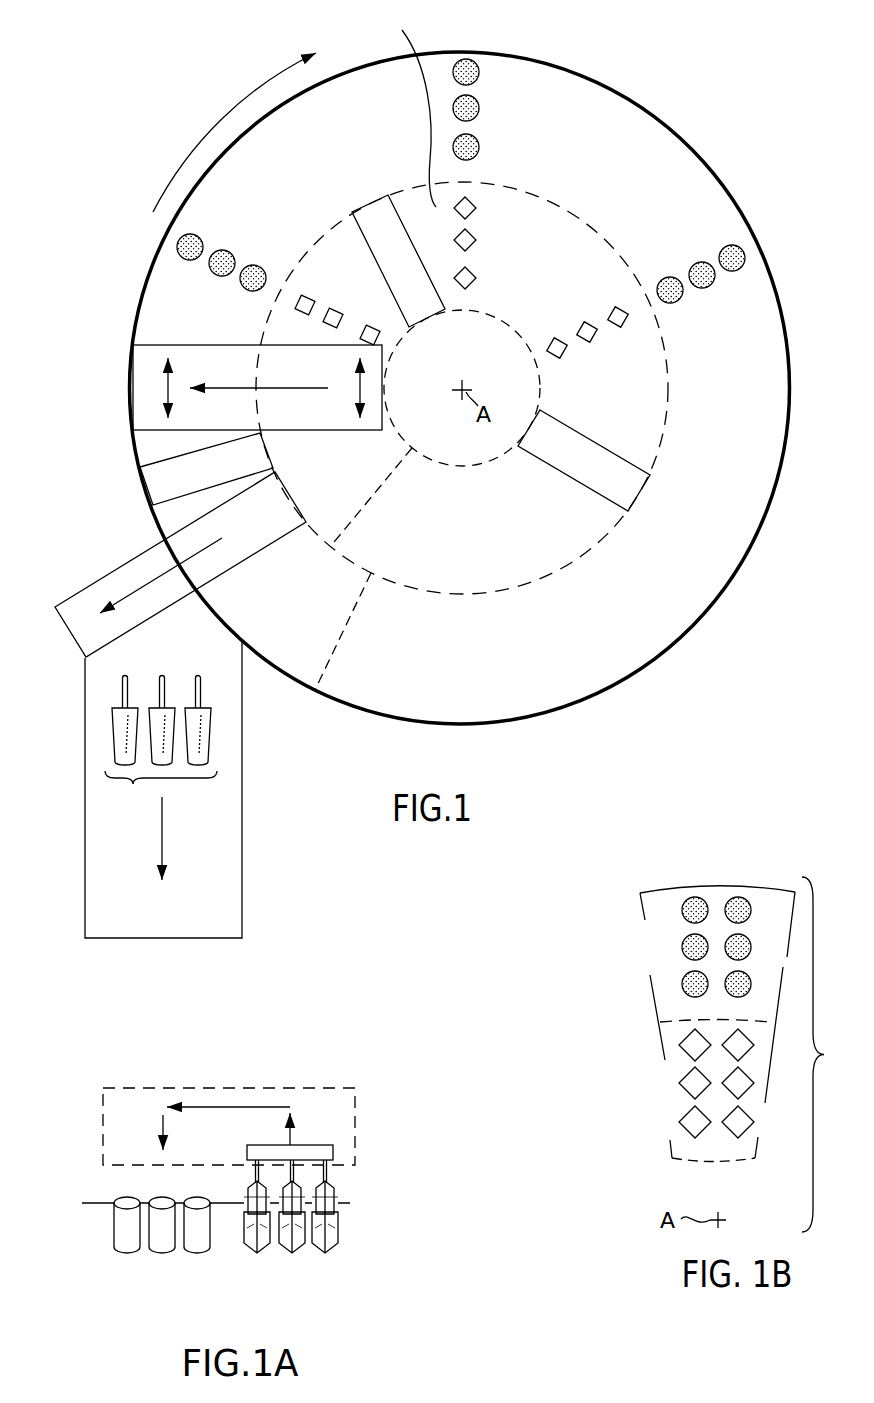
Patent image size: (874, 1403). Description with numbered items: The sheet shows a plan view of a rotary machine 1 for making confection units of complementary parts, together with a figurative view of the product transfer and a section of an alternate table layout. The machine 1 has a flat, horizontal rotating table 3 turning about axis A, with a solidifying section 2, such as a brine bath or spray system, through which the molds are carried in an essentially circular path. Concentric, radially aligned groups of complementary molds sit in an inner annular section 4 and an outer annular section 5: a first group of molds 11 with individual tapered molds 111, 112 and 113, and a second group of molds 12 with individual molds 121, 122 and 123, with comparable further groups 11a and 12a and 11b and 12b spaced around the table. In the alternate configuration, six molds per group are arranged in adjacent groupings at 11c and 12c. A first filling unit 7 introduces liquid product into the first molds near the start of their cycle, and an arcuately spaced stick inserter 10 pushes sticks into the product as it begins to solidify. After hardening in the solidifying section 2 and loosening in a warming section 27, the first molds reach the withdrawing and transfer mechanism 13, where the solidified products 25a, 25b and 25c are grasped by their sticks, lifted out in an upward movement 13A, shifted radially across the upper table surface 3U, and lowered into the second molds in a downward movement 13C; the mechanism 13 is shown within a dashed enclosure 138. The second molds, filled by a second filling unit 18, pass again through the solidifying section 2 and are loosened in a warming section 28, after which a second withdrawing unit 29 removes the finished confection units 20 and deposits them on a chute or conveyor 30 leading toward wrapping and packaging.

In FIG. 1, the machine 1 is at (120, 260).
In FIG. 1, the solidifying section 2 is at (388, 95).
In FIG. 1, the rotating table 3 is at (679, 135).
In FIG. 1, the inner annular section 4 is at (480, 535).
In FIG. 1, the outer annular section 5 is at (550, 665).
In FIG. 1, the first filling unit 7 is at (398, 261).
In FIG. 1, the stick inserter 10 is at (604, 458).
In FIG. 1, the first group of molds 11 is at (387, 330).
In FIG. 1A, the first group of molds 11 is at (340, 1260).
In FIG. 1, the first mold 111 is at (300, 294).
In FIG. 1, the first mold 112 is at (333, 307).
In FIG. 1, the first mold 113 is at (380, 342).
In FIG. 1, the first mold group 11a is at (487, 193).
In FIG. 1, the first mold group 11b is at (638, 323).
In FIG. 1B, the first mold group 11c is at (667, 1030).
In FIG. 1, the second group of molds 12 is at (258, 305).
In FIG. 1A, the second group of molds 12 is at (210, 1260).
In FIG. 1, the second mold 121 is at (177, 247).
In FIG. 1, the second mold 122 is at (211, 256).
In FIG. 1, the second mold 123 is at (243, 268).
In FIG. 1, the second mold group 12a is at (487, 60).
In FIG. 1, the second mold group 12b is at (753, 265).
In FIG. 1B, the second mold group 12c is at (667, 895).
In FIG. 1, the withdrawing and transfer mechanism 13 is at (257, 387).
In FIG. 1A, the withdrawing and transfer mechanism 13 is at (334, 1118).
In FIG. 1A, the upward movement 13A is at (265, 1129).
In FIG. 1A, the downward movement 13C is at (190, 1132).
In FIG. 1A, the transfer device control unit 138 is at (228, 1106).
In FIG. 1, the second filling unit 18 is at (218, 481).
In FIG. 1, the confection unit 20 is at (133, 783).
In FIG. 1, the warming section 27 is at (352, 485).
In FIG. 1, the warming section 28 is at (290, 603).
In FIG. 1, the second withdrawing unit 29 is at (180, 564).
In FIG. 1, the chute or conveyor 30 is at (163, 790).
In FIG. 1A, the upper table surface 3U is at (82, 1203).
In FIG. 1A, the solidified product 25a is at (340, 1210).
In FIG. 1A, the solidified product 25b is at (336, 1204).
In FIG. 1A, the solidified product 25c is at (327, 1189).